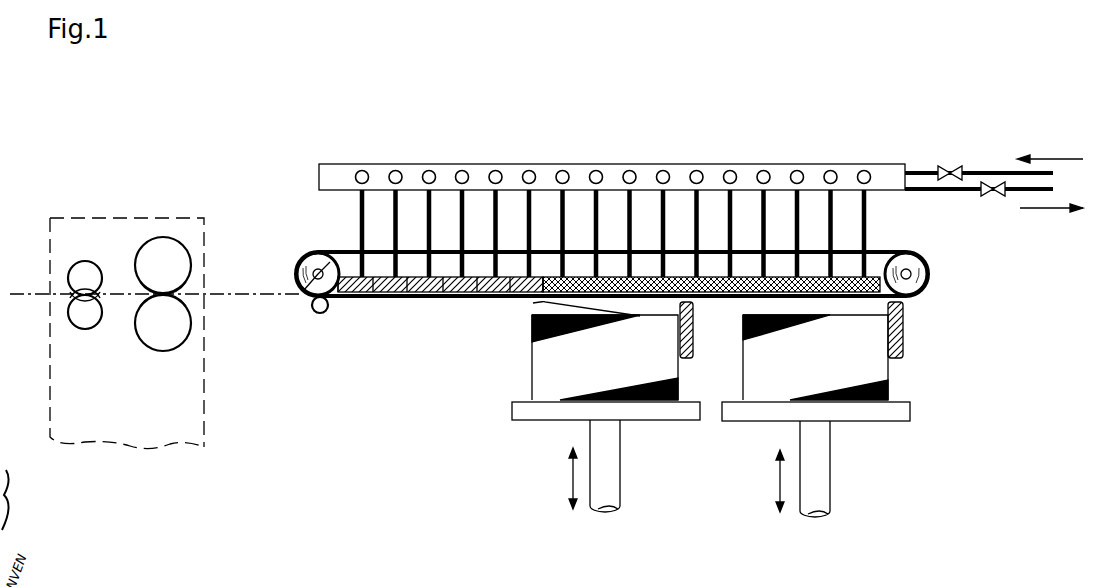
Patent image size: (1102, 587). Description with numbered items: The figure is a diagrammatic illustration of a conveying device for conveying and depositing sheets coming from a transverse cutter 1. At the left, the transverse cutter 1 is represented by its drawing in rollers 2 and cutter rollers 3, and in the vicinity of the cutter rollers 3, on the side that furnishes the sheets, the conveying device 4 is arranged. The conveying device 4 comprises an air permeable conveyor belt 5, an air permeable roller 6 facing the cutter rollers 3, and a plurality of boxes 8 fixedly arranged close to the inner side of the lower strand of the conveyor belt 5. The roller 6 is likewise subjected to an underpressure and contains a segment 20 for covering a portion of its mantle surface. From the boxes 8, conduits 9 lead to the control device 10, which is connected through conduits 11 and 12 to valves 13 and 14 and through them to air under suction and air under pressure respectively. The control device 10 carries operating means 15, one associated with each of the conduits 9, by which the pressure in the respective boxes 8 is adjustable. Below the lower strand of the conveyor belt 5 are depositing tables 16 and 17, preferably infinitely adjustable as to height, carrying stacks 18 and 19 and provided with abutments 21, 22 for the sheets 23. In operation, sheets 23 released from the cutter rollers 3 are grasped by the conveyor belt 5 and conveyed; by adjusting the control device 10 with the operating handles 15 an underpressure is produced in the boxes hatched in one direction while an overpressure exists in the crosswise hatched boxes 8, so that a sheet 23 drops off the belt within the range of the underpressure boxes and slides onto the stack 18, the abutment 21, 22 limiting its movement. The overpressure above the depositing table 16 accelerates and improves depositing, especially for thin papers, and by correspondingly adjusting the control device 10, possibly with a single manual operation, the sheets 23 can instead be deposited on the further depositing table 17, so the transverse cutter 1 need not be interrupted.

The transverse cutter 1 is at (148, 213).
The drawing in rollers 2 is at (70, 310).
The cutter rollers 3 is at (177, 318).
The conveying device 4 is at (352, 388).
The air permeable conveyor belt 5 is at (850, 248).
The air permeable roller 6 is at (305, 296).
The boxes 8 is at (455, 296).
The conduits 9 is at (527, 217).
The control device 10 is at (568, 163).
The conduit 11 is at (918, 172).
The conduit 12 is at (952, 190).
The valve 13 is at (957, 172).
The valve 14 is at (1000, 192).
The operating means 15 is at (690, 172).
The depositing table 16 is at (535, 410).
The depositing table 17 is at (752, 410).
The stack 18 is at (657, 367).
The stack 19 is at (866, 365).
The segment 20 is at (281, 262).
The abutment 21 is at (693, 350).
The abutment 22 is at (903, 350).
The sheets 23 is at (533, 304).